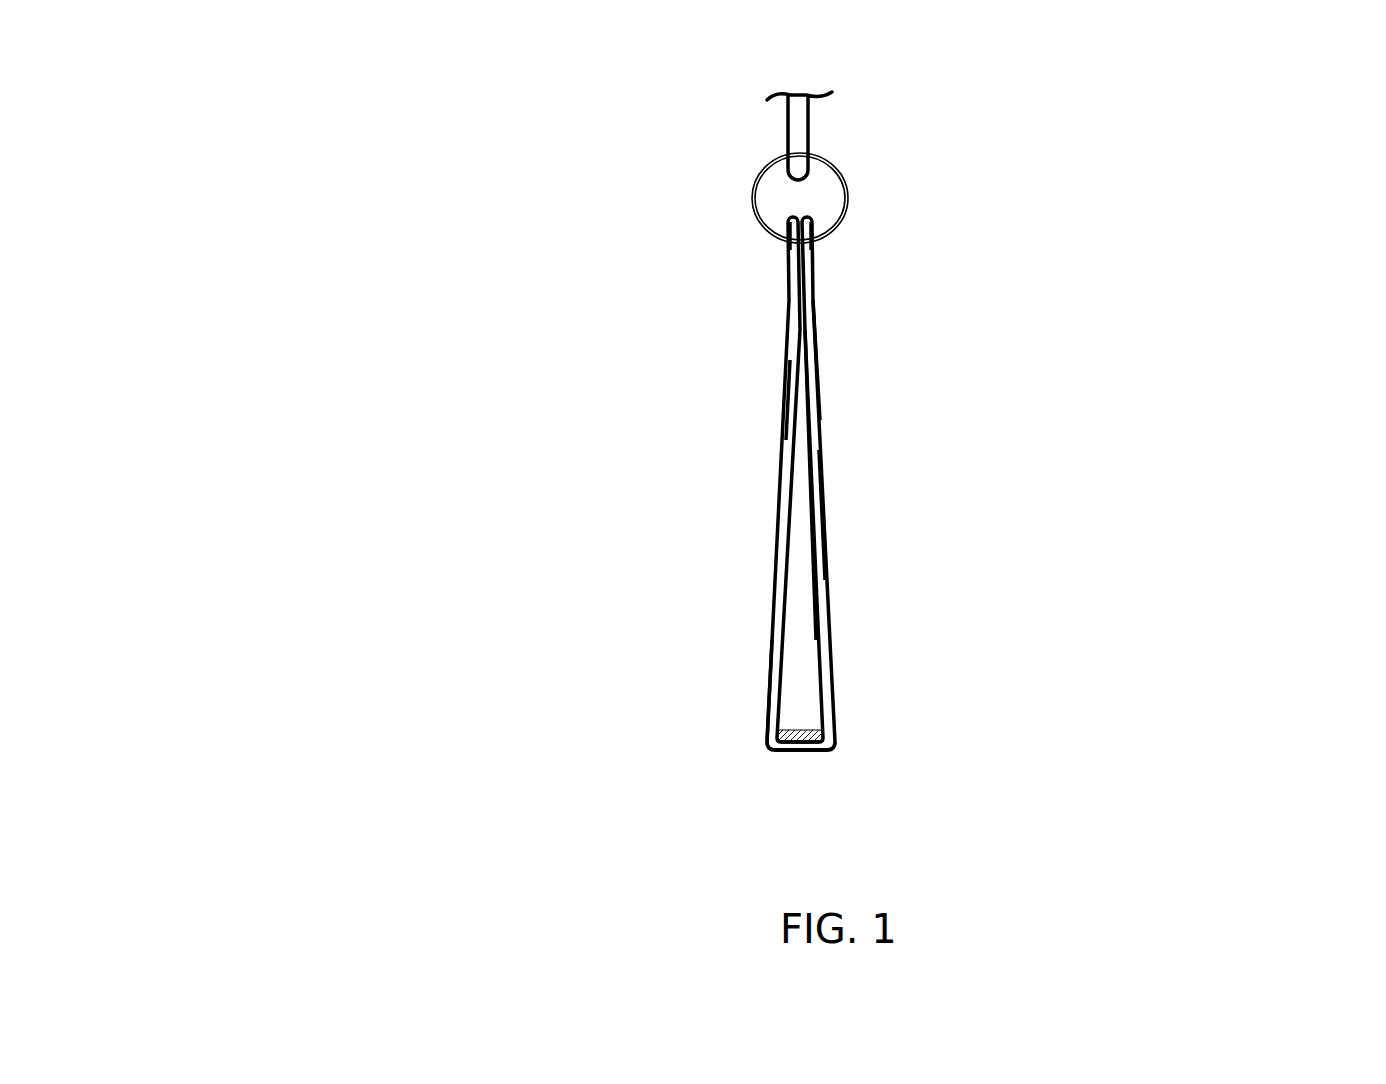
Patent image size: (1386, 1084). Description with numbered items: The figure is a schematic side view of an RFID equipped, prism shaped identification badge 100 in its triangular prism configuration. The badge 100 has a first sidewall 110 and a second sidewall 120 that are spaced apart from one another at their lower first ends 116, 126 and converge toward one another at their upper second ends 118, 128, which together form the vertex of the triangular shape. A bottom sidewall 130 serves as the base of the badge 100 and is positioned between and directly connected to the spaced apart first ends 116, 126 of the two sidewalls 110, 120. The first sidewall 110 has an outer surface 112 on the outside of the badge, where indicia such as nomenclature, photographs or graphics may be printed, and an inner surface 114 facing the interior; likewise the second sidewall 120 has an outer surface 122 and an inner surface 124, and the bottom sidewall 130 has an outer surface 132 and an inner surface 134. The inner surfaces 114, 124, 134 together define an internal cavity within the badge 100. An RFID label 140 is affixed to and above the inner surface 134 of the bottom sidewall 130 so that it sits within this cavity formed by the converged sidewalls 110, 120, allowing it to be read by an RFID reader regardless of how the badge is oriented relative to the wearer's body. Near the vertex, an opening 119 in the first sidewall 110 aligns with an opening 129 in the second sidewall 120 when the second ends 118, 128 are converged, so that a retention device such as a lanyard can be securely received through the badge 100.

The RFID equipped, prism shaped identification badge 100 is at (266, 109).
The first sidewall 110 is at (788, 393).
The outer surface 112 is at (786, 427).
The inner surface 114 is at (799, 450).
The first end 116 is at (768, 733).
The second end 118 is at (790, 240).
The opening 119 is at (790, 244).
The second sidewall 120 is at (818, 370).
The outer surface 122 is at (822, 535).
The inner surface 124 is at (812, 587).
The first end 126 is at (831, 737).
The second end 128 is at (812, 240).
The opening 129 is at (812, 244).
The bottom sidewall 130 is at (790, 749).
The outer surface 132 is at (792, 749).
The inner surface 134 is at (834, 742).
The RFID label 140 is at (828, 732).